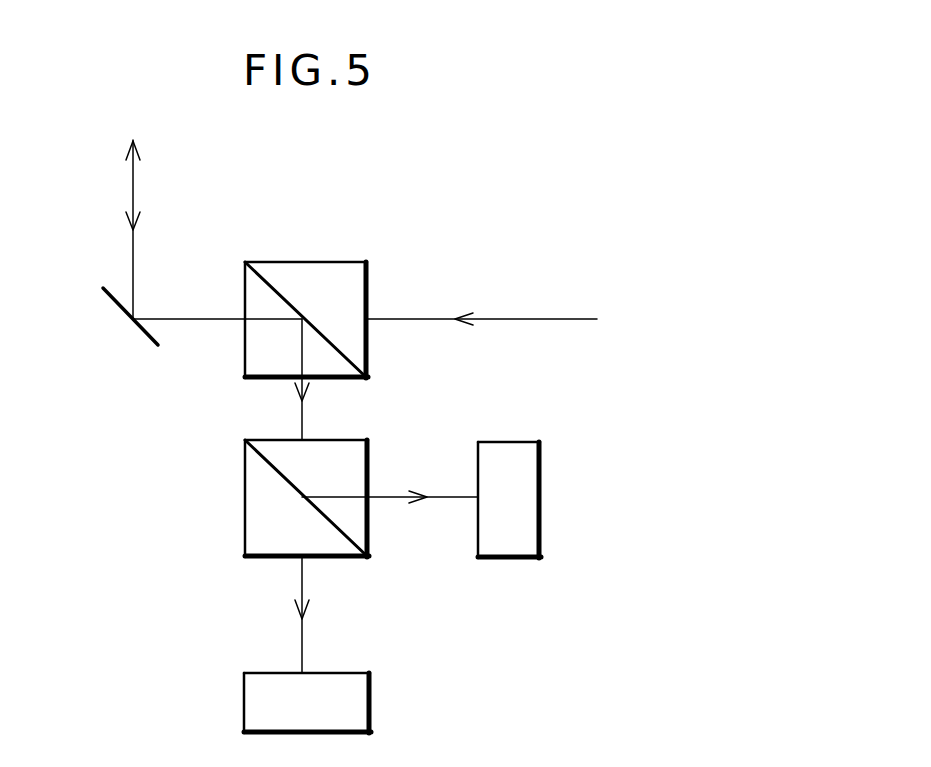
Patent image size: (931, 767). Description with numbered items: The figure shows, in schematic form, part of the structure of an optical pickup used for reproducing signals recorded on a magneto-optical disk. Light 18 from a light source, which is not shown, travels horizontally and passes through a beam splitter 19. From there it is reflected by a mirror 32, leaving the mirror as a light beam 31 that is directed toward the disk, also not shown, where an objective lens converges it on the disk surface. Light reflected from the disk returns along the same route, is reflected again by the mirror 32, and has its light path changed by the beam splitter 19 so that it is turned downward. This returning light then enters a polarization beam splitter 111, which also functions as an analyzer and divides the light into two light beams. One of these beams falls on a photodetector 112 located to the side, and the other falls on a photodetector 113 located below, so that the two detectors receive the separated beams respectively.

The light 18 is at (558, 319).
The beam splitter 19 is at (345, 266).
The light beam 31 is at (193, 317).
The mirror 32 is at (145, 335).
The polarization beam splitter 111 is at (350, 458).
The photodetector 112 is at (517, 460).
The photodetector 113 is at (350, 700).